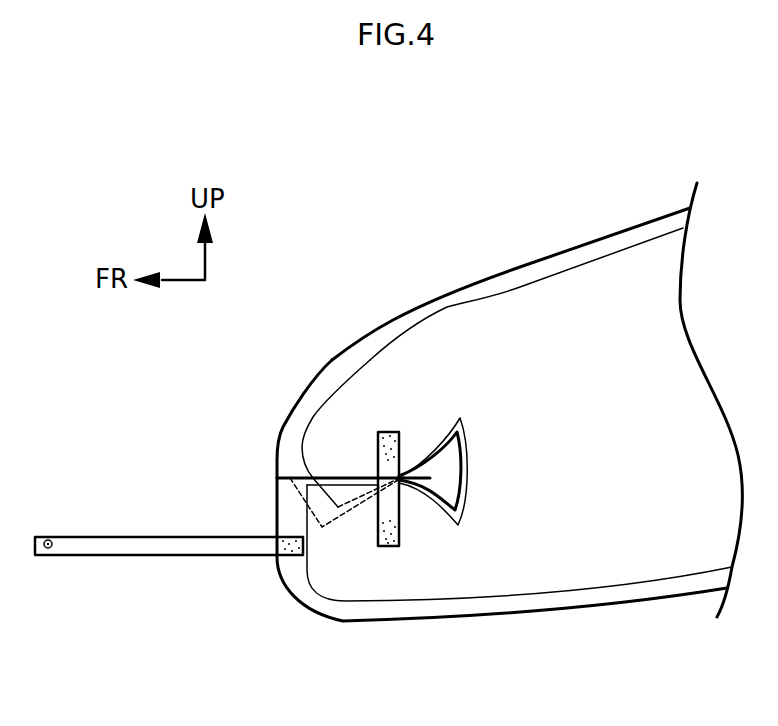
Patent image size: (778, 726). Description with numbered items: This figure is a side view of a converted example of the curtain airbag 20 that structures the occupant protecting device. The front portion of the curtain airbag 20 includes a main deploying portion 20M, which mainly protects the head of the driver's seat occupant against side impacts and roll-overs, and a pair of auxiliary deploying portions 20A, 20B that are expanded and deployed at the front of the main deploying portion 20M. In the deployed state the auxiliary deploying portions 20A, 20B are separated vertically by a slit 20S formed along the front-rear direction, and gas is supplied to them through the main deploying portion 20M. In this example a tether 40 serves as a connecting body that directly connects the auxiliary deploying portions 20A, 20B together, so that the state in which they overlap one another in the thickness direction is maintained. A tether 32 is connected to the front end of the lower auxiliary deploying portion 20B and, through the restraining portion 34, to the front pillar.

The curtain airbag 20 is at (623, 214).
The main deploying portion 20M is at (558, 310).
The auxiliary deploying portion 20A is at (348, 418).
The auxiliary deploying portion 20B is at (362, 578).
The slit 20S is at (448, 475).
The tether 40 is at (388, 507).
The tether 32 is at (203, 545).
The restraining portion 34 is at (43, 538).